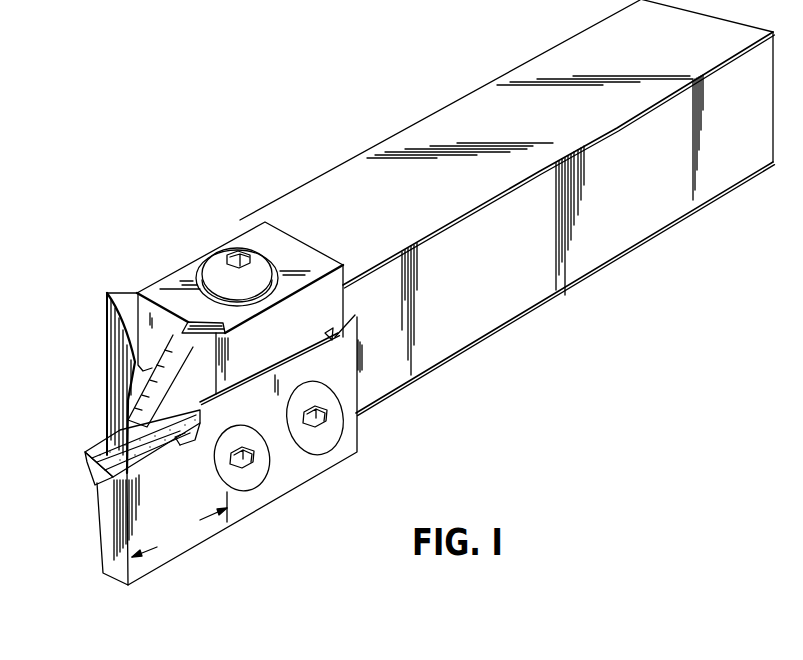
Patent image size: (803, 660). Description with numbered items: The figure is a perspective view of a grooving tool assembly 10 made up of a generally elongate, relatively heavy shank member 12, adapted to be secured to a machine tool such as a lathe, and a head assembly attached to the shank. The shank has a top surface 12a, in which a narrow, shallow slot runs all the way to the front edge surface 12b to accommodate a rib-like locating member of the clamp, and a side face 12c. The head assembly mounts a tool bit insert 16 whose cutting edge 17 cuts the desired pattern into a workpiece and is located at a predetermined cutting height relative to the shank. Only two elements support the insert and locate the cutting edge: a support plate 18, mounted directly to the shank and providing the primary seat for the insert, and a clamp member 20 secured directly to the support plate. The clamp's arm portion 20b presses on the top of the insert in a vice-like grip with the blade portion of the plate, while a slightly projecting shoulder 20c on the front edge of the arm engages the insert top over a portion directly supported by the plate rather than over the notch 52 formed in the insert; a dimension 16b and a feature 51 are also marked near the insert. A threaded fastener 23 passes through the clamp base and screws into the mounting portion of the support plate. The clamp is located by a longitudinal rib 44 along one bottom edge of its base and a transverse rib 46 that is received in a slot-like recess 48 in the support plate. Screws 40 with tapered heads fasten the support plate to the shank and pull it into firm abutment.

The tool assembly 10 is at (403, 292).
The shank member 12 is at (507, 208).
The top surface of shank 12a is at (542, 126).
The front edge surface of shank 12b is at (137, 378).
The front side face of shank 12c is at (640, 202).
The tool bit insert 16 is at (135, 446).
The insert overhang dimension 16b is at (179, 524).
The cutting edge 17 is at (90, 453).
The support plate 18 is at (217, 439).
The clamp member 20 is at (193, 374).
The arm portion 20b is at (216, 382).
The shoulder 20c is at (148, 473).
The threaded fastener 23 is at (213, 258).
The screw 40 is at (320, 455).
The longitudinal rib 44 is at (143, 360).
The transverse rib 46 is at (343, 328).
The slot-like recess 48 is at (355, 347).
The insert seat stop 51 is at (206, 437).
The notch 52 is at (187, 450).